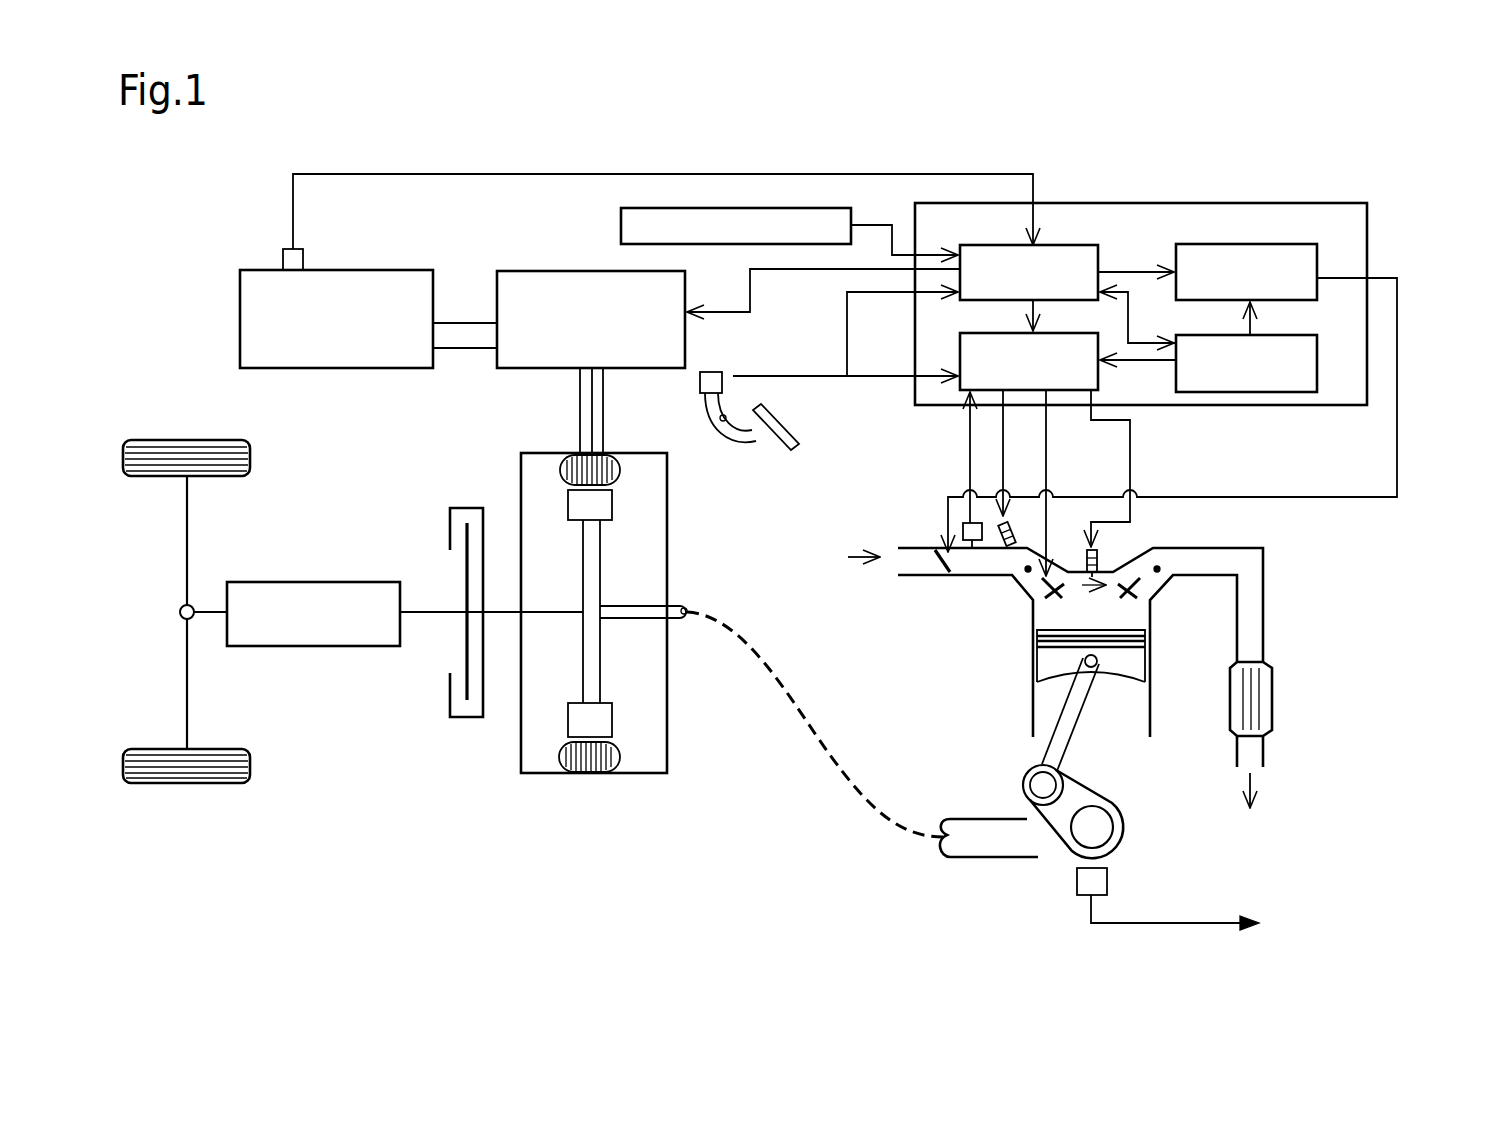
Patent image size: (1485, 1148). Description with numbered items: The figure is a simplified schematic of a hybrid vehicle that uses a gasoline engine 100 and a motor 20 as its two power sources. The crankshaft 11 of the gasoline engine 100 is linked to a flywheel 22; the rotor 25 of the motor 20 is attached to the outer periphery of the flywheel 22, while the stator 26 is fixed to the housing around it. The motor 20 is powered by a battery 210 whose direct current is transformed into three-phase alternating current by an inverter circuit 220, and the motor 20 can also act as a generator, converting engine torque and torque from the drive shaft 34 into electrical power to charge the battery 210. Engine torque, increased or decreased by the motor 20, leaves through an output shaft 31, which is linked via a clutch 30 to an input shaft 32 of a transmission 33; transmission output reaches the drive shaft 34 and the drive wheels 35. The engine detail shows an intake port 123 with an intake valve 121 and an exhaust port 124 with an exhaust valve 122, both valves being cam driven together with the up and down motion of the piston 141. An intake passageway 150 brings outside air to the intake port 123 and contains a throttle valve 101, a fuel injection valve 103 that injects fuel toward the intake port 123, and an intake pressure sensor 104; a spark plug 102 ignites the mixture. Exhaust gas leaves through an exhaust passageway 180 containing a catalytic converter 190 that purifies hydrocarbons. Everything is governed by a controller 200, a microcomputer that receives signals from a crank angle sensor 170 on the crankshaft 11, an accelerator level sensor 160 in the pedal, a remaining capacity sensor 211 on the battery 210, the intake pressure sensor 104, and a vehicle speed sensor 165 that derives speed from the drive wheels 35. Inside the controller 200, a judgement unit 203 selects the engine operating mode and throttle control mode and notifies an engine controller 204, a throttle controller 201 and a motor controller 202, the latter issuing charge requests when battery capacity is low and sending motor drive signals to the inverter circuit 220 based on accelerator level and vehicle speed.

The crankshaft 11 is at (655, 620).
The motor 20 is at (620, 457).
The flywheel 22 is at (600, 667).
The rotor 25 is at (612, 522).
The stator 26 is at (562, 485).
The clutch 30 is at (478, 506).
The output shaft 31 is at (513, 614).
The input shaft 32 is at (455, 614).
The transmission 33 is at (330, 646).
The drive shaft 34 is at (187, 530).
The drive wheels 35 is at (225, 440).
The gasoline engine 100 is at (966, 682).
The throttle valve 101 is at (935, 576).
The spark plug 102 is at (1098, 560).
The fuel injection valve 103 is at (1012, 525).
The intake pressure sensor 104 is at (963, 530).
The intake valve 121 is at (1050, 598).
The exhaust valve 122 is at (1122, 600).
The intake port 123 is at (1022, 572).
The exhaust port 124 is at (1160, 566).
The piston 141 is at (1118, 672).
The intake passageway 150 is at (955, 578).
The accelerator level sensor 160 is at (698, 378).
The vehicle speed sensor 165 is at (790, 207).
The crank angle sensor 170 is at (1077, 880).
The exhaust passageway 180 is at (1218, 615).
The catalytic converter 190 is at (1230, 701).
The controller 200 is at (1368, 222).
The throttle controller 201 is at (1344, 242).
The motor controller 202 is at (1075, 243).
The judgement unit 203 is at (1295, 335).
The engine controller 204 is at (962, 333).
The battery 210 is at (405, 356).
The remaining capacity sensor 211 is at (283, 258).
The inverter circuit 220 is at (663, 360).